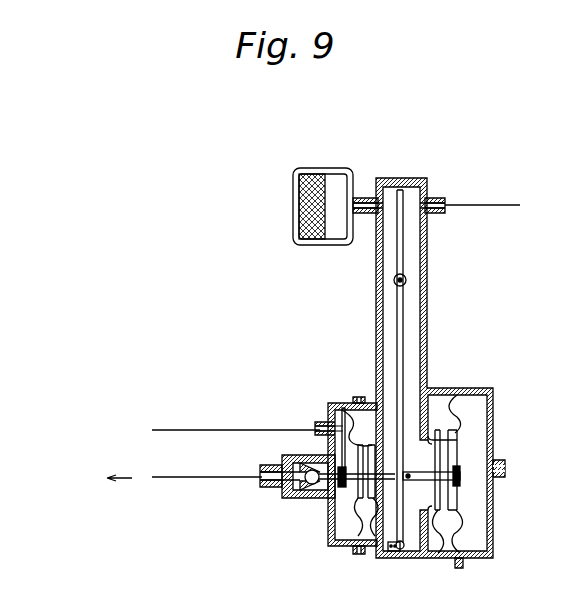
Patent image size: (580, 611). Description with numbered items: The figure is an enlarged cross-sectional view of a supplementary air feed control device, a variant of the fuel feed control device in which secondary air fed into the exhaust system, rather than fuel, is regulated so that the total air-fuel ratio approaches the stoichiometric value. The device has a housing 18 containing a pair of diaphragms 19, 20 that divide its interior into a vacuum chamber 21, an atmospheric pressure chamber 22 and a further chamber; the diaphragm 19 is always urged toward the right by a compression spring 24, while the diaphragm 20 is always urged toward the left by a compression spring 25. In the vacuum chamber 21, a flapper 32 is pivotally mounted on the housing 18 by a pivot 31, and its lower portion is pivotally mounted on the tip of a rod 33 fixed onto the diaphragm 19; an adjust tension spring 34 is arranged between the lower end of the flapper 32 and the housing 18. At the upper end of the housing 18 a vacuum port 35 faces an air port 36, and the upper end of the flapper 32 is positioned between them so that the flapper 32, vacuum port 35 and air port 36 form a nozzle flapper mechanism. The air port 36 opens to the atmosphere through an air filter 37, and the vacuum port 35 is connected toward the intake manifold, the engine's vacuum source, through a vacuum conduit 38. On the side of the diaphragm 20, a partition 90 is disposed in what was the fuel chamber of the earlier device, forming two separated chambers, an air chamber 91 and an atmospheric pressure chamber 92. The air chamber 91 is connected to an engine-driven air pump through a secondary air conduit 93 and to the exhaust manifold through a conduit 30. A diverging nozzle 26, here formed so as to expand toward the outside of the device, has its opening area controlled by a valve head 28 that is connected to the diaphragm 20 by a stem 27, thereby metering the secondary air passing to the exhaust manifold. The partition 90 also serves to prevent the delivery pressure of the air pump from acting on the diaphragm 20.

The housing 18 is at (422, 316).
The diaphragm 19 is at (458, 438).
The diaphragm 20 is at (357, 554).
The vacuum chamber 21 is at (362, 472).
The atmospheric pressure chamber 22 is at (480, 540).
The compression spring 24 is at (459, 560).
The compression spring 25 is at (362, 402).
The diverging nozzle 26 is at (310, 456).
The stem 27 is at (304, 498).
The valve head 28 is at (277, 483).
The conduit 30 is at (208, 478).
The pivot 31 is at (406, 280).
The flapper 32 is at (406, 240).
The rod 33 is at (440, 481).
The adjust tension spring 34 is at (395, 554).
The vacuum port 35 is at (429, 198).
The air port 36 is at (364, 198).
The air filter 37 is at (292, 212).
The vacuum conduit 38 is at (487, 205).
The partition 90 is at (332, 528).
The air chamber 91 is at (336, 520).
The atmospheric pressure chamber 92 is at (344, 420).
The secondary air conduit 93 is at (258, 430).